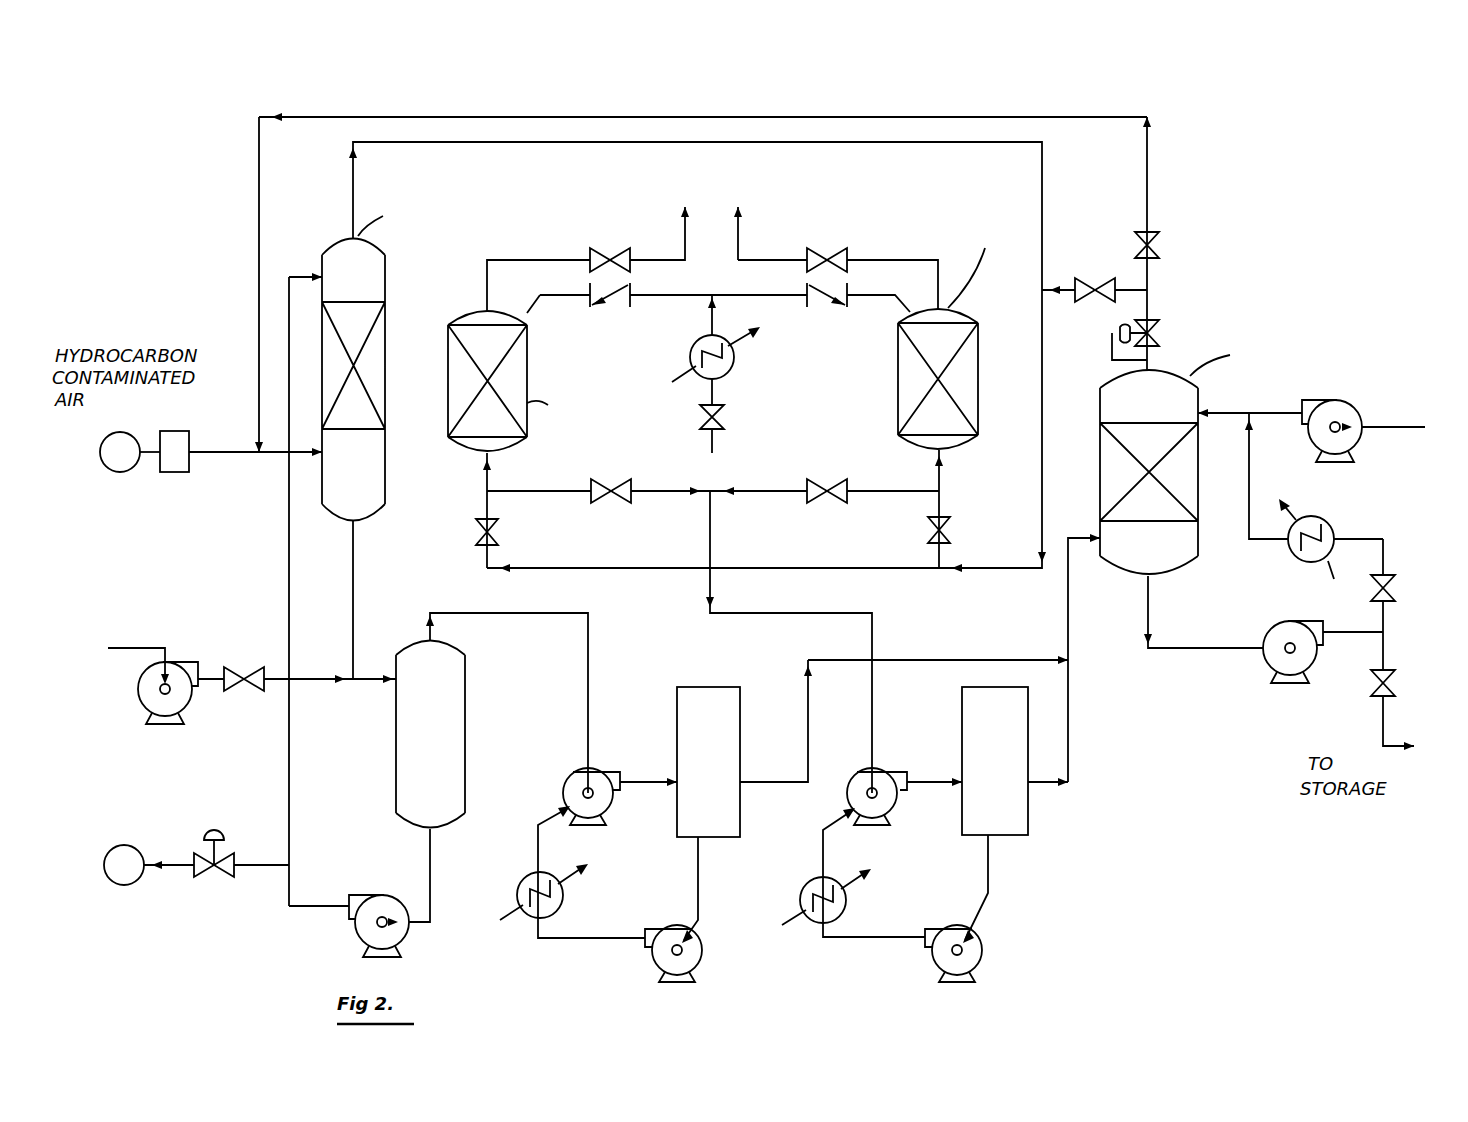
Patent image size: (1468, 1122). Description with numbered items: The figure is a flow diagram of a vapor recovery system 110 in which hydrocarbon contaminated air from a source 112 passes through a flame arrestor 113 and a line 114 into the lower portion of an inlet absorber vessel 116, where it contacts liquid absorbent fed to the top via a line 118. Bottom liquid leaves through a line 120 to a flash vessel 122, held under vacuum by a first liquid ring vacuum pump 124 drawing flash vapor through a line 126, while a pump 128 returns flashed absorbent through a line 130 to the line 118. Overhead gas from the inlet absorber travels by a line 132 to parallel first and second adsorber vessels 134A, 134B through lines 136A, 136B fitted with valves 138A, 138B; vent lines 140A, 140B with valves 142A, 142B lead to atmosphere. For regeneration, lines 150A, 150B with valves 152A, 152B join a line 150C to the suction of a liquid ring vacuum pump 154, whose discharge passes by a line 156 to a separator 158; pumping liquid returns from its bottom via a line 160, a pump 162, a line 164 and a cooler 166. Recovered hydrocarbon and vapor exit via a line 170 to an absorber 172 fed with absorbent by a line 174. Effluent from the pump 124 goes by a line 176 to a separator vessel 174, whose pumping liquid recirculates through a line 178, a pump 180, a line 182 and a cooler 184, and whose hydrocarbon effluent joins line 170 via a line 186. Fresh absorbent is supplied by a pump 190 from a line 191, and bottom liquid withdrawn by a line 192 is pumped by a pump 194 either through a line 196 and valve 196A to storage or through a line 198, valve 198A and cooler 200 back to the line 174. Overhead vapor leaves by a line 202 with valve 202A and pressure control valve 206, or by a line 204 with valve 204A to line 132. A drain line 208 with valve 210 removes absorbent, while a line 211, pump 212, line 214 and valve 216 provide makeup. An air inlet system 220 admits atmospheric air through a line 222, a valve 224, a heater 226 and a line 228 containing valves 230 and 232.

The vapor recovery system 110 is at (1250, 180).
The source of hydrocarbon contaminated air 112 is at (130, 470).
The flame arrestor 113 is at (172, 431).
The line 114 is at (196, 447).
The inlet absorber vessel 116 is at (385, 282).
The line 118 is at (289, 500).
The line 120 is at (353, 564).
The flash vessel 122 is at (396, 790).
The first liquid ring vacuum pump 124 is at (605, 772).
The line 126 is at (550, 613).
The pump 128 is at (364, 895).
The line 130 is at (432, 870).
The line 132 is at (565, 142).
The first adsorber vessel 134A is at (898, 393).
The second adsorber vessel 134B is at (527, 388).
The line 136A is at (942, 474).
The line 136B is at (490, 474).
The valve 138A is at (950, 534).
The valve 138B is at (500, 534).
The line 140A is at (940, 290).
The line 140B is at (487, 278).
The valve 142A is at (833, 248).
The valve 142B is at (602, 248).
The line 150A is at (865, 491).
The line 150B is at (528, 491).
The line 150C is at (712, 526).
The valve 152A is at (822, 479).
The valve 152B is at (604, 479).
The liquid ring vacuum pump 154 is at (890, 772).
The line 156 is at (930, 782).
The seal fluid-hydrocarbon separator 158 is at (962, 690).
The line 160 is at (988, 886).
The pump 162 is at (945, 925).
The line 164 is at (823, 856).
The cooler 166 is at (846, 903).
The line 170 is at (1068, 712).
The absorber 172 is at (1176, 372).
The line / separator vessel 174 is at (690, 687).
The line 176 is at (640, 782).
The line 178 is at (698, 857).
The pump 180 is at (662, 927).
The line 182 is at (538, 835).
The cooler 184 is at (563, 897).
The line 186 is at (808, 718).
The pump 190 is at (1312, 442).
The line 191 is at (1385, 427).
The line 192 is at (1148, 622).
The pump 194 is at (1292, 621).
The line 196 is at (1383, 733).
The valve 196A is at (1393, 680).
The line 198 is at (1383, 556).
The valve 198A is at (1393, 590).
The cooler 200 is at (1322, 518).
The line 202 is at (259, 258).
The valve 202A is at (1157, 242).
The line 204 is at (1108, 300).
The valve 204A is at (1090, 280).
The pressure control valve 206 is at (1158, 328).
The drain line 208 is at (174, 876).
The valve 210 is at (218, 878).
The line 211 is at (146, 648).
The pump 212 is at (190, 705).
The line 214 is at (320, 688).
The valve 216 is at (236, 667).
The air inlet system 220 is at (680, 349).
The line 222 is at (716, 446).
The valve 224 is at (722, 424).
The heater 226 is at (735, 360).
The line 228 is at (688, 295).
The valve 230 is at (824, 308).
The valve 232 is at (612, 308).